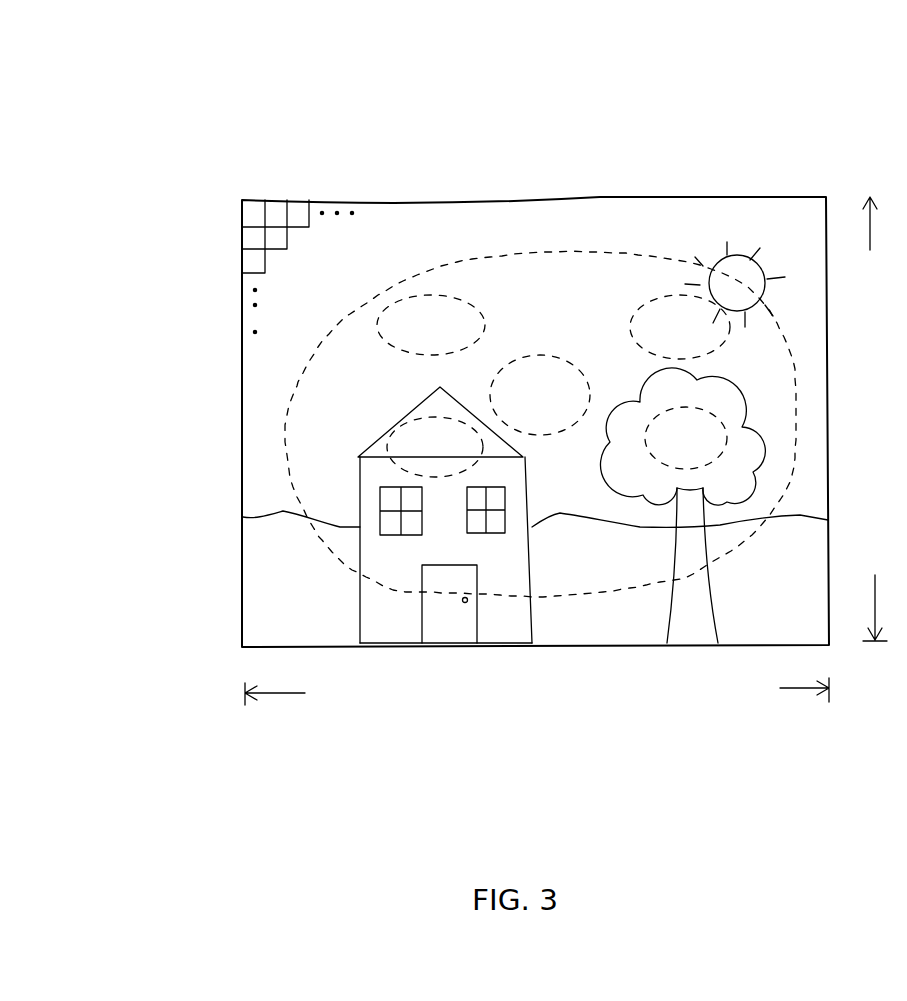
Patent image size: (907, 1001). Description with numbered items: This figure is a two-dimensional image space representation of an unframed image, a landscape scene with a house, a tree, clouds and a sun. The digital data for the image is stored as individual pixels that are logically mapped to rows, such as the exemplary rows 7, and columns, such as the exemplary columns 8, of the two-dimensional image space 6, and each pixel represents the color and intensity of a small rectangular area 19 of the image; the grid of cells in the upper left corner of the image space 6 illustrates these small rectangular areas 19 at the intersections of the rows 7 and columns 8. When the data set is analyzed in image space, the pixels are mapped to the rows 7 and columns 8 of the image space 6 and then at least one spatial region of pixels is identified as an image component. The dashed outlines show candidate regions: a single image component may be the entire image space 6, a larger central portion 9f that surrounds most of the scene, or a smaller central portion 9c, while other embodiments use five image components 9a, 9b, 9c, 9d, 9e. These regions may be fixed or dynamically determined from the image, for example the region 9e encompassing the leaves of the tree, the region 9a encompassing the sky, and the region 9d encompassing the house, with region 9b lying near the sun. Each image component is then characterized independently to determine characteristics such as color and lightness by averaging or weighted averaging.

The two-dimensional image space 6 is at (130, 630).
The rows 7 is at (119, 222).
The columns 8 is at (308, 109).
The small rectangular area 19 is at (298, 215).
The region 9a is at (432, 337).
The region 9b is at (680, 336).
The smaller central portion 9c is at (542, 401).
The region 9d is at (442, 456).
The region 9e is at (688, 448).
The larger central portion 9f is at (356, 396).